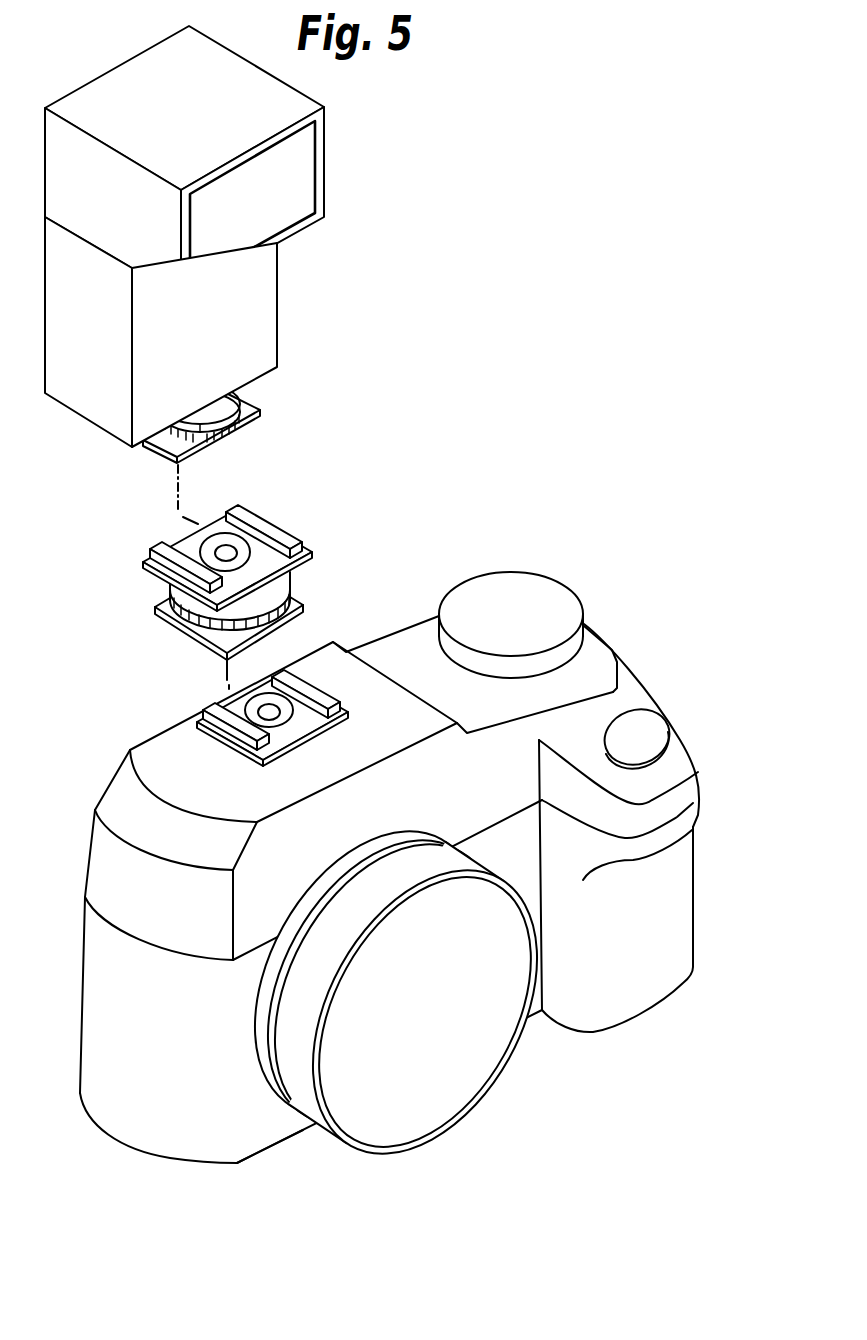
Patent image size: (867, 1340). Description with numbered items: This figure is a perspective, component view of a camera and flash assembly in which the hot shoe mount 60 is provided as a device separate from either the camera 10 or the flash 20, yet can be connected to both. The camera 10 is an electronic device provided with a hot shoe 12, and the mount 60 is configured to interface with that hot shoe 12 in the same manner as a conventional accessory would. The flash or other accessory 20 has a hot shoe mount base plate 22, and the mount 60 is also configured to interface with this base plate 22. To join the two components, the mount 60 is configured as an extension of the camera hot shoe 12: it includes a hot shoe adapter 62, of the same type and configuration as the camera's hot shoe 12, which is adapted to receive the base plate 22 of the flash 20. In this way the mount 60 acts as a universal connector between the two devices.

The camera 10 is at (652, 634).
The hot shoe 12 is at (202, 700).
The flash 20 is at (384, 192).
The hot shoe mount base plate 22 is at (270, 412).
The hot shoe mount 60 is at (326, 556).
The hot shoe adapter 62 is at (243, 512).